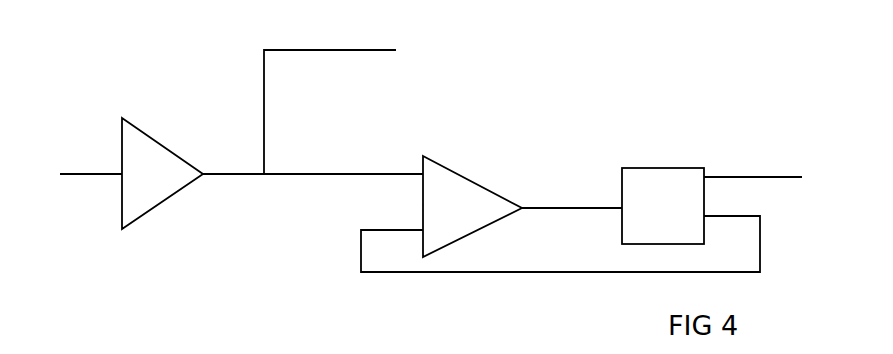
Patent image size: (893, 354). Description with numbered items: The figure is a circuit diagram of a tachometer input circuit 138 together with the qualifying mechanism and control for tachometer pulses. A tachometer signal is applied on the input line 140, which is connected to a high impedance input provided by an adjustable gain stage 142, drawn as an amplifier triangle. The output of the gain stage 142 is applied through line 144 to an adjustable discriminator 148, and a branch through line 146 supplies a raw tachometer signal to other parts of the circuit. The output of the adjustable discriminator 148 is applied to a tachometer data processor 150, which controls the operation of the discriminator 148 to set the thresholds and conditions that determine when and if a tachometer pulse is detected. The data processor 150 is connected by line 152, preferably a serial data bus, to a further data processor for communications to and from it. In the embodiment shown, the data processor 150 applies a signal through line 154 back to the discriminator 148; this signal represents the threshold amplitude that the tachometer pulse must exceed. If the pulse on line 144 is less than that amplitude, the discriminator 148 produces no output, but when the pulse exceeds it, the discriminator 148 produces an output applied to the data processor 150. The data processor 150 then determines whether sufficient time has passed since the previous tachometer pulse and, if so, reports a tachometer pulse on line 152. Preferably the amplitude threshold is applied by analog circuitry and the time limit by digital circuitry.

The tachometer input circuit 138 is at (131, 58).
The input line 140 is at (92, 173).
The adjustable gain stage 142 is at (148, 133).
The line 144 is at (227, 176).
The line 146 is at (300, 50).
The adjustable discriminator 148 is at (443, 166).
The tachometer data processor 150 is at (642, 168).
The line 152 is at (737, 177).
The line 154 is at (487, 272).